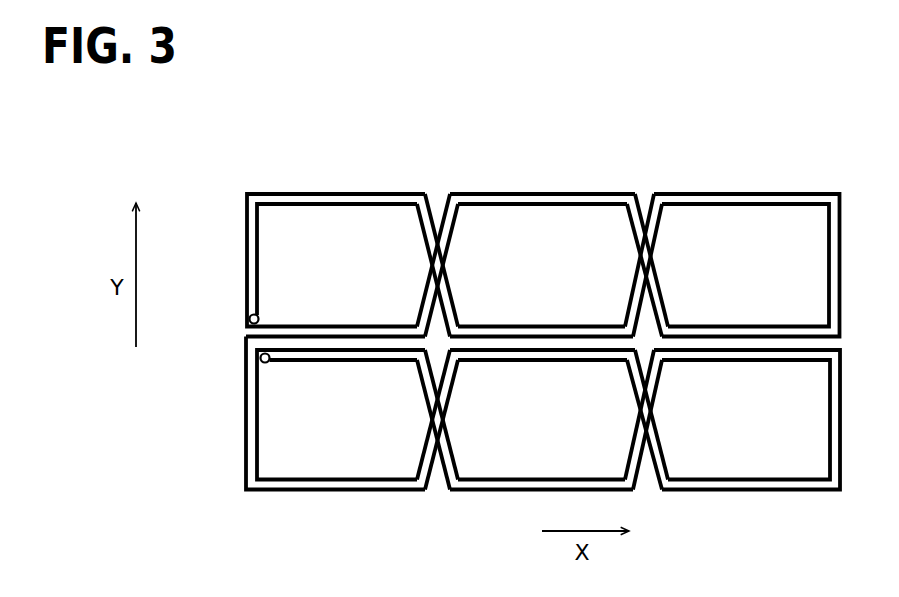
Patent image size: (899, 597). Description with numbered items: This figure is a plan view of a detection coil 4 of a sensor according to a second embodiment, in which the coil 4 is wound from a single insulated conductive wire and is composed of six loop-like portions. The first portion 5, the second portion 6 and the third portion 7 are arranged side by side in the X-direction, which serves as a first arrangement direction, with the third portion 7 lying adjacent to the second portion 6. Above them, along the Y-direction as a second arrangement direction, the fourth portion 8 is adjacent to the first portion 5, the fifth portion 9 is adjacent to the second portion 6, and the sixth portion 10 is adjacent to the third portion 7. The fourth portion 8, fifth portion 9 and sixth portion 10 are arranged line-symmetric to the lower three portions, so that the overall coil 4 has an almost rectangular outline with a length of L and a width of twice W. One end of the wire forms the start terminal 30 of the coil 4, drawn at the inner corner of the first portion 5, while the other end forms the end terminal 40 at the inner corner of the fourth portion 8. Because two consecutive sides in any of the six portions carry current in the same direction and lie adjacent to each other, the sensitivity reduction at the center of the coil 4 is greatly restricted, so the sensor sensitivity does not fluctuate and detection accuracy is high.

The detection coil 4 is at (468, 499).
The first portion 5 is at (322, 497).
The second portion 6 is at (528, 468).
The third portion 7 is at (765, 497).
The fourth portion 8 is at (334, 186).
The fifth portion 9 is at (544, 185).
The sixth portion 10 is at (736, 185).
The start terminal 30 is at (260, 358).
The end terminal 40 is at (249, 319).